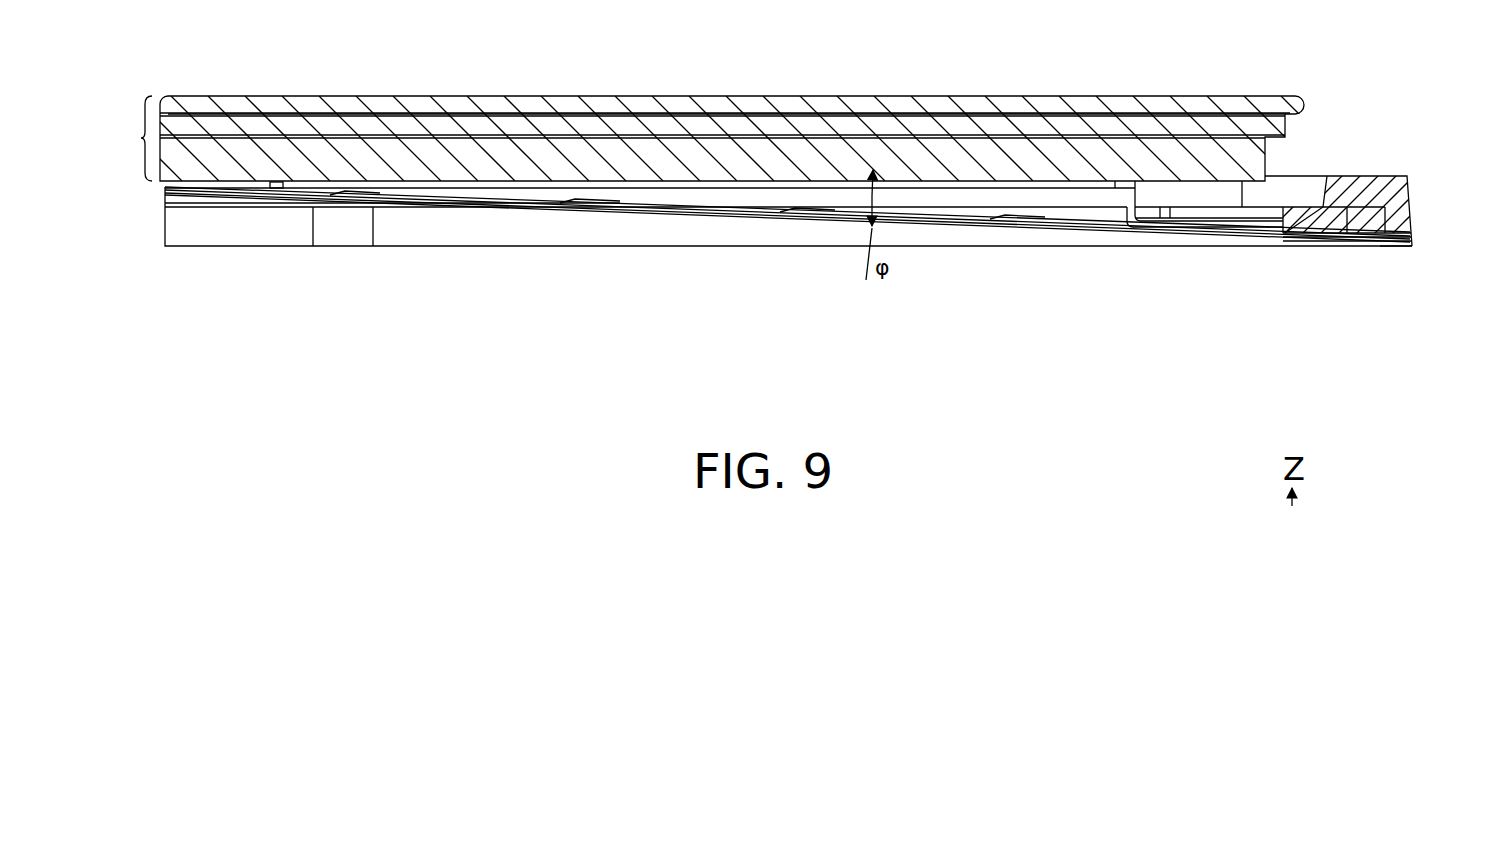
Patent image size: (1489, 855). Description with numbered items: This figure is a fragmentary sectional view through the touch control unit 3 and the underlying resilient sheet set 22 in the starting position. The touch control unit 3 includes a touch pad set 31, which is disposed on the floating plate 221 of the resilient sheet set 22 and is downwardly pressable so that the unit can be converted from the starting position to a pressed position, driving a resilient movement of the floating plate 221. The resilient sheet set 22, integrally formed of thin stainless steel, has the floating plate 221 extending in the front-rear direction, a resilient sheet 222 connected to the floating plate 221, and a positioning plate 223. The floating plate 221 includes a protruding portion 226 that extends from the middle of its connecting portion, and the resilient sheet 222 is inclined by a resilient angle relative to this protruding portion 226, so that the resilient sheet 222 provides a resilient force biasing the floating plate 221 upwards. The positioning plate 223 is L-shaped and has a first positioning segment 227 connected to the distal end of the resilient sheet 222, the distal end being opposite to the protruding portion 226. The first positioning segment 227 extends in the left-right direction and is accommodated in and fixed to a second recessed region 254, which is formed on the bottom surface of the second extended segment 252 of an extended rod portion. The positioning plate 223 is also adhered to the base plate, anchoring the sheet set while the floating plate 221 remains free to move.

The touch control unit 3 is at (184, 94).
The touch pad set 31 is at (126, 138).
The resilient sheet set 22 is at (1028, 232).
The floating plate 221 is at (157, 190).
The resilient sheet 222 is at (661, 216).
The positioning plate 223 is at (1400, 252).
The protruding portion 226 is at (231, 183).
The first positioning segment 227 is at (1326, 248).
The second extended segment 252 is at (1352, 178).
The second recessed region 254 is at (1414, 235).